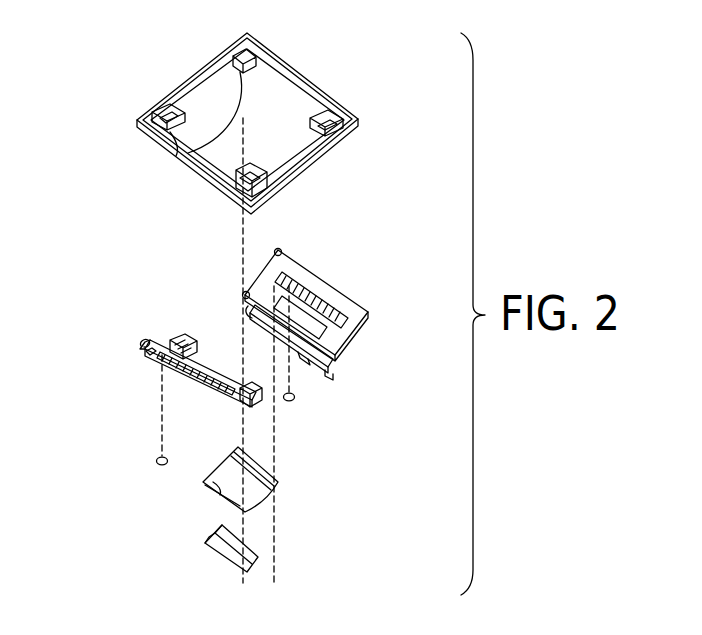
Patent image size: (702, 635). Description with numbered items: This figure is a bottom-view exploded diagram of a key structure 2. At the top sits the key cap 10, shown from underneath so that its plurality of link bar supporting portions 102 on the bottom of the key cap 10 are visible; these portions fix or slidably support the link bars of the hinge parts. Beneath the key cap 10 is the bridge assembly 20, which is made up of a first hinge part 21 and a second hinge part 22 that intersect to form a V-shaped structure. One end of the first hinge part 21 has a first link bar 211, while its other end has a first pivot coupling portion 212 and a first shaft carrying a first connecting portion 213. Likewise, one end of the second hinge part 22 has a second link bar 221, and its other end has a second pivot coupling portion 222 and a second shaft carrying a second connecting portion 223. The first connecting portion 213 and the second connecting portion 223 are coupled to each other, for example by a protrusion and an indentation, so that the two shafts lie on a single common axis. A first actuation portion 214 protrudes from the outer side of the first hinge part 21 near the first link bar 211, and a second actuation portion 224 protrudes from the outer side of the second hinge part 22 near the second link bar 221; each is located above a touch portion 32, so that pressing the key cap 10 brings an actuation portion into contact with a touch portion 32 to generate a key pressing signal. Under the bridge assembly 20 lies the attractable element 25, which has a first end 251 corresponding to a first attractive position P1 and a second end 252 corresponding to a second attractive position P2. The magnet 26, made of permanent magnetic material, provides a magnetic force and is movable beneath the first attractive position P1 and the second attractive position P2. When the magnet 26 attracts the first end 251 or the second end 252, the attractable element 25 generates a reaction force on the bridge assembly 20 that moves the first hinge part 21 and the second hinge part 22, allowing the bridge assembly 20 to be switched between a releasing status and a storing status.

The key structure 2 is at (72, 68).
The key cap 10 is at (303, 75).
The link bar supporting portions 102 is at (176, 130).
The bridge assembly 20 is at (352, 257).
The second hinge part 22 is at (352, 334).
The second link bar 221 is at (275, 251).
The second pivot coupling portion 222 is at (244, 293).
The second connecting portion 223 is at (258, 309).
The second actuation portion 224 is at (345, 306).
The first hinge part 21 is at (170, 340).
The first link bar 211 is at (143, 344).
The first pivot coupling portion 212 is at (146, 354).
The first connecting portion 213 is at (200, 354).
The first actuation portion 214 is at (195, 392).
The touch portion 32 is at (156, 461).
The attractable element 25 is at (281, 488).
The first end 251 is at (236, 491).
The second end 252 is at (264, 467).
The first attractive position P1 is at (238, 509).
The second attractive position P2 is at (275, 516).
The magnet 26 is at (222, 547).